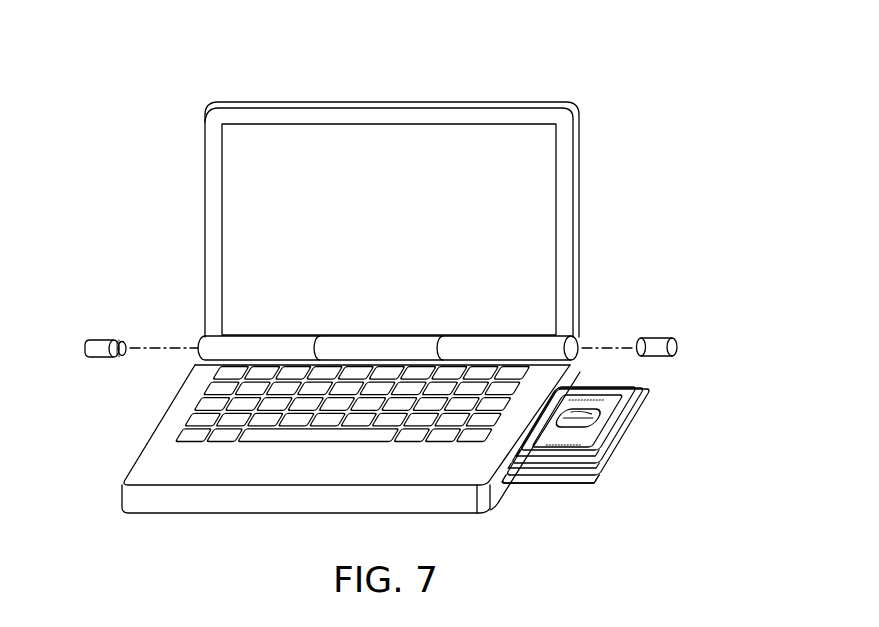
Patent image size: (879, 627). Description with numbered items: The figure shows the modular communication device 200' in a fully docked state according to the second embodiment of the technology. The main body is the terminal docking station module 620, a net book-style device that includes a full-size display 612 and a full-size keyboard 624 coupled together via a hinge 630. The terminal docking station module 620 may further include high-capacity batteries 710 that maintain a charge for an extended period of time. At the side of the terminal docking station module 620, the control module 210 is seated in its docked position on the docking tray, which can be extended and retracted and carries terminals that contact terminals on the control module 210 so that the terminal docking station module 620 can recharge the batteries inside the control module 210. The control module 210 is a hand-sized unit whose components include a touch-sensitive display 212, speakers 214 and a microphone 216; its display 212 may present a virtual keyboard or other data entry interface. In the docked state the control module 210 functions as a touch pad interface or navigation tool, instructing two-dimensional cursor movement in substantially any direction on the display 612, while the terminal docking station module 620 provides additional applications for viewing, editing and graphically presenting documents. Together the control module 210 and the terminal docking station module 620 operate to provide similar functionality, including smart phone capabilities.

The modular communication device 200' is at (386, 298).
The display 612 is at (276, 128).
The terminal docking station module 620 is at (432, 115).
The hinge 630 is at (198, 347).
The keyboard 624 is at (193, 427).
The high-capacity batteries 710 is at (98, 343).
The control module 210 is at (619, 447).
The display 212 is at (636, 404).
The speakers 214 is at (597, 388).
The microphone 216 is at (558, 452).